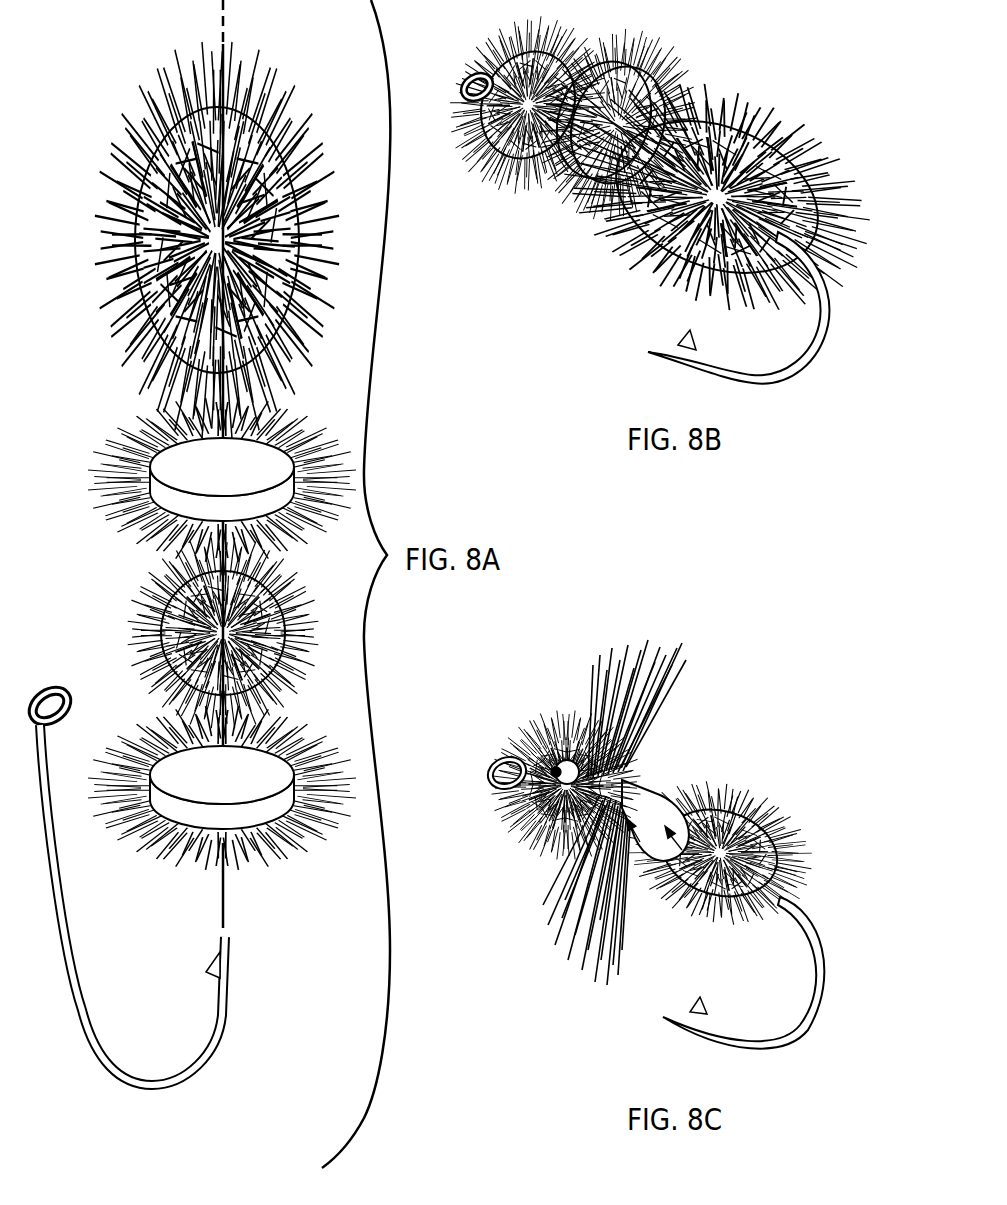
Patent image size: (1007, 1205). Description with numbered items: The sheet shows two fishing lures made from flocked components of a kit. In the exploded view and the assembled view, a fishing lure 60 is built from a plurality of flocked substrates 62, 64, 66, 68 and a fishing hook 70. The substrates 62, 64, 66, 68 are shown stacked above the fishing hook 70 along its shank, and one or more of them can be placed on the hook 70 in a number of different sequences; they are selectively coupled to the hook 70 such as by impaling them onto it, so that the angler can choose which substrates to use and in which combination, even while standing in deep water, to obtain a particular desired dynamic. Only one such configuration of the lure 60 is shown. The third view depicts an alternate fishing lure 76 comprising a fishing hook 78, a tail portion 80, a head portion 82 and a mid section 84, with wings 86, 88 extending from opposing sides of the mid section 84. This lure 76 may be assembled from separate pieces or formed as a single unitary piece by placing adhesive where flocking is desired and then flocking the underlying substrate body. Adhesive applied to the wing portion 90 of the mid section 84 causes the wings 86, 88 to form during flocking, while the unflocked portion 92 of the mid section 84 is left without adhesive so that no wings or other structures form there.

In FIG. 8B, the fishing lure 60 is at (730, 45).
In FIG. 8A, the substrate 62 is at (112, 108).
In FIG. 8A, the substrate 64 is at (118, 446).
In FIG. 8A, the substrate 66 is at (133, 592).
In FIG. 8A, the substrate 68 is at (298, 738).
In FIG. 8A, the fishing hook 70 is at (90, 908).
In FIG. 8C, the alternate fishing lure 76 is at (669, 830).
In FIG. 8C, the fishing hook 78 is at (812, 1035).
In FIG. 8C, the tail portion 80 is at (795, 815).
In FIG. 8C, the head portion 82 is at (520, 843).
In FIG. 8C, the mid section 84 is at (668, 775).
In FIG. 8C, the wing 86 is at (705, 640).
In FIG. 8C, the wing 88 is at (578, 985).
In FIG. 8C, the wing portion 90 is at (680, 920).
In FIG. 8C, the unflocked portion 92 is at (736, 935).